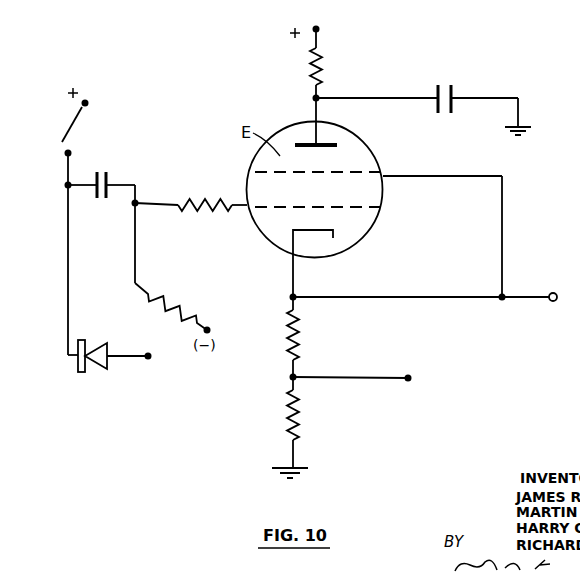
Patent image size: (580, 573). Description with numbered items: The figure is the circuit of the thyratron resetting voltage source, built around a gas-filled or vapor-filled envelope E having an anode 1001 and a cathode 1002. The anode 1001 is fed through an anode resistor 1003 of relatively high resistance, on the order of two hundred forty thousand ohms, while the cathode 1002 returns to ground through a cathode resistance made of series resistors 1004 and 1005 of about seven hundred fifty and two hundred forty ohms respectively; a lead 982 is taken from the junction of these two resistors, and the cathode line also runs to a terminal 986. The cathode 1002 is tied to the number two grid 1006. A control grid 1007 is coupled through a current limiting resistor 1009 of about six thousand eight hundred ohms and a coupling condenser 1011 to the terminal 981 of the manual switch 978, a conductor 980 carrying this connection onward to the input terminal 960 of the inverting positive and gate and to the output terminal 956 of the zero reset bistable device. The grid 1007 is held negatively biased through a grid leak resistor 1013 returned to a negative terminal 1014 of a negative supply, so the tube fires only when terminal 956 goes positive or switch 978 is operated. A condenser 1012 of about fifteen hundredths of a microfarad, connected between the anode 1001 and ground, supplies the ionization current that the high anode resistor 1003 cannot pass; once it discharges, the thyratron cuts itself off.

The manual switch 978 is at (85, 108).
The terminal of the manual switch 981 is at (70, 152).
The conductor 980 is at (83, 187).
The coupling condenser 1011 is at (99, 201).
The current limiting resistor 1009 is at (195, 206).
The anode resistor 1003 is at (308, 78).
The condenser 1012 is at (443, 88).
The anode 1001 is at (334, 144).
The number 2 grid 1006 is at (381, 172).
The control grid 1007 is at (379, 208).
The cathode 1002 is at (314, 232).
The grid leak resistor 1013 is at (165, 305).
The negative terminal 1014 is at (210, 331).
The series resistor 1004 is at (288, 344).
The series resistor 1005 is at (287, 418).
The output terminal conductor 982 is at (393, 377).
The output terminal 986 is at (553, 302).
The output terminal 956 is at (150, 358).
The input terminal 960 is at (126, 358).